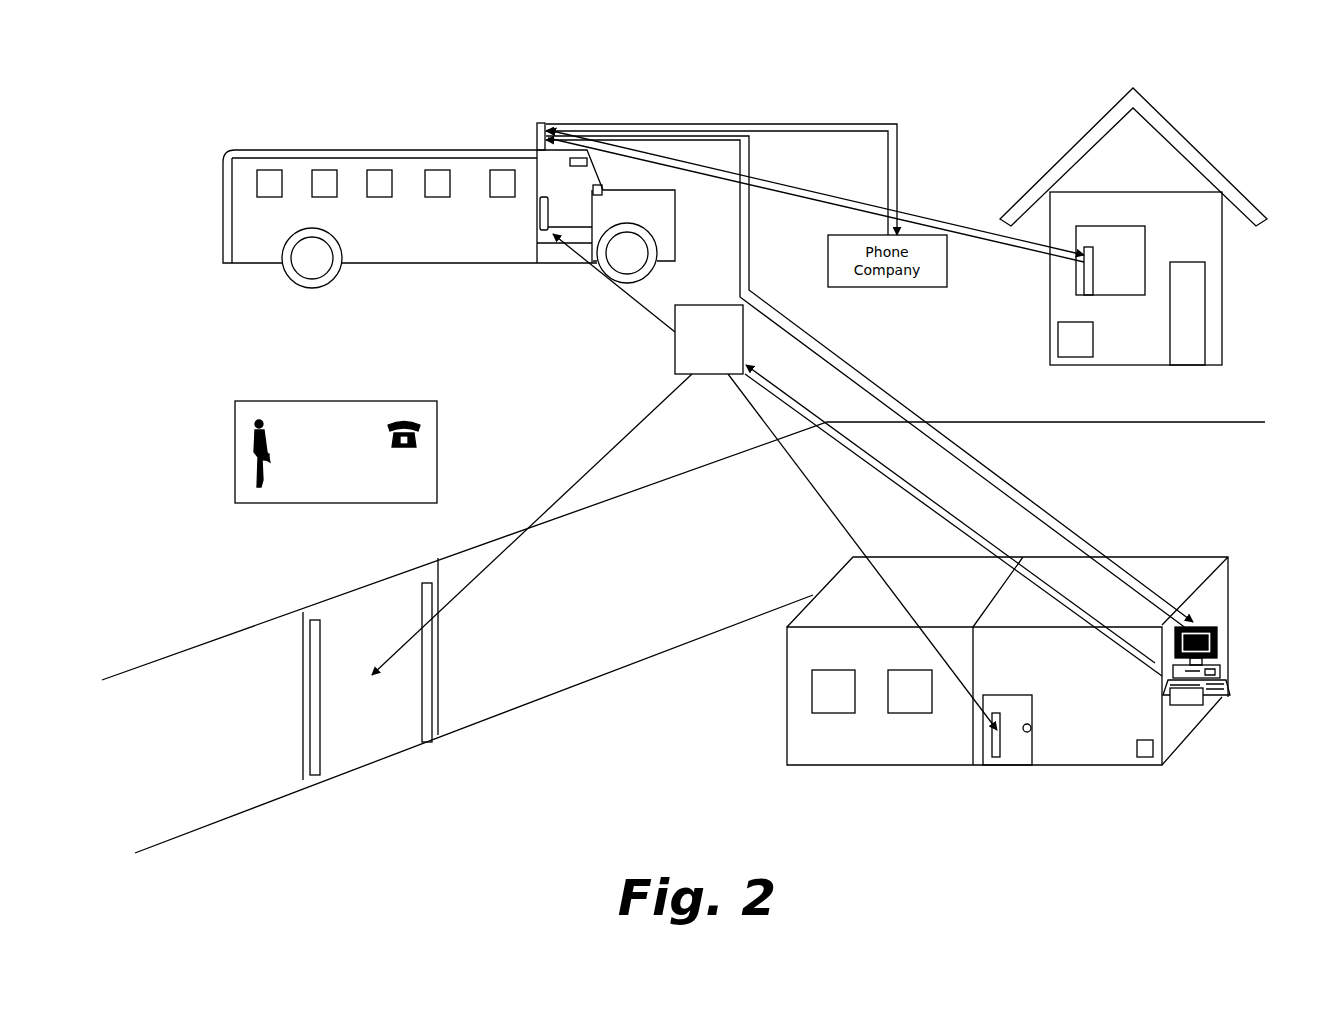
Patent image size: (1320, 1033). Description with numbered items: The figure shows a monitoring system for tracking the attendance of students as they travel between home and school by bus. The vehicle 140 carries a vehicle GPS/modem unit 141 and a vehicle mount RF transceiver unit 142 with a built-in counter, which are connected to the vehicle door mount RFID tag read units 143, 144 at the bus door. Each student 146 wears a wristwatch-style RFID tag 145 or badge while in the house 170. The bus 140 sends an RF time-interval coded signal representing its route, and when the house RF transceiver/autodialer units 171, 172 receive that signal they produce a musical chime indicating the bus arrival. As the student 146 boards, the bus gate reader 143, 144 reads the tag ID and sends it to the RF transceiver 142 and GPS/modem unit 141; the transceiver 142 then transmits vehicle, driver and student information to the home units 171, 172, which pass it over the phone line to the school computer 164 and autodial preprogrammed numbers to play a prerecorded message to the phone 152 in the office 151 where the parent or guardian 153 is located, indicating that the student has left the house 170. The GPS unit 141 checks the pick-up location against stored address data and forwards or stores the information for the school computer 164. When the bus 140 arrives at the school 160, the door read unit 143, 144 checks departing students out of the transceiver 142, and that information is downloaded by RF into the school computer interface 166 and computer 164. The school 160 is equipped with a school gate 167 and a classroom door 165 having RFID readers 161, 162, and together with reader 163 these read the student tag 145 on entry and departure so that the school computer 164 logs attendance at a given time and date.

The vehicle (bus) 140 is at (223, 225).
The vehicle GPS/modem unit 141 is at (535, 123).
The vehicle mount RF transceiver unit 142 is at (570, 161).
The vehicle door mount RFID tag read unit 143 is at (619, 181).
The vehicle door mount RFID tag read unit 144 is at (590, 264).
The RFID tag 145 is at (708, 352).
The student (personnel) 146 is at (767, 517).
The office 151 is at (317, 401).
The phone 152 is at (400, 412).
The parent or guardian 153 is at (252, 432).
The school 160 is at (1007, 661).
The school gate RFID reader 161 is at (312, 727).
The classroom door RFID reader 162 is at (988, 758).
The school door reader 163 is at (1170, 758).
The school computer 164 is at (1212, 628).
The classroom door 165 is at (1022, 748).
The school RF transceiver unit (computer interface) 166 is at (1197, 705).
The school gate 167 is at (370, 640).
The house 170 is at (1050, 170).
The house RF transceiver/autodialer unit 171 is at (1106, 271).
The house RF transceiver/autodialer unit 172 is at (1058, 330).